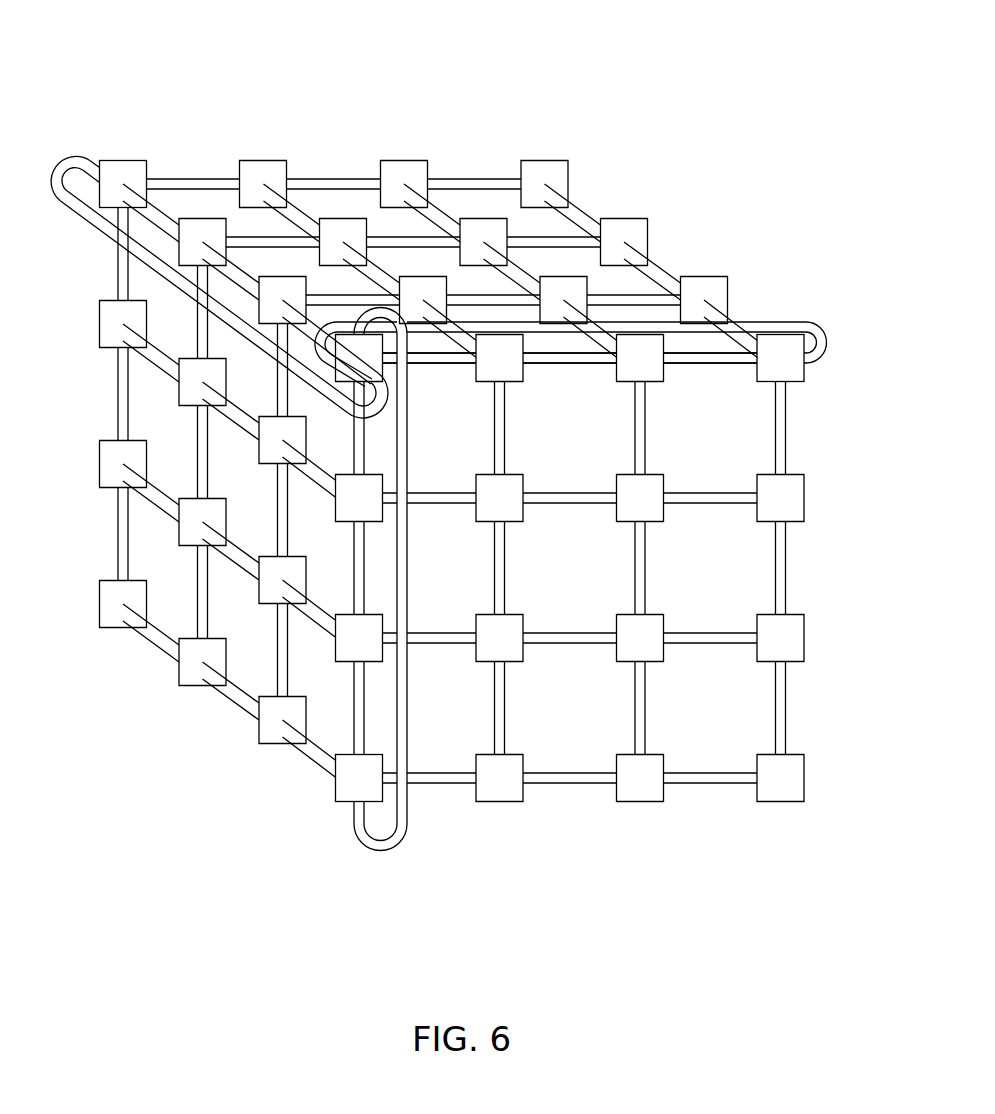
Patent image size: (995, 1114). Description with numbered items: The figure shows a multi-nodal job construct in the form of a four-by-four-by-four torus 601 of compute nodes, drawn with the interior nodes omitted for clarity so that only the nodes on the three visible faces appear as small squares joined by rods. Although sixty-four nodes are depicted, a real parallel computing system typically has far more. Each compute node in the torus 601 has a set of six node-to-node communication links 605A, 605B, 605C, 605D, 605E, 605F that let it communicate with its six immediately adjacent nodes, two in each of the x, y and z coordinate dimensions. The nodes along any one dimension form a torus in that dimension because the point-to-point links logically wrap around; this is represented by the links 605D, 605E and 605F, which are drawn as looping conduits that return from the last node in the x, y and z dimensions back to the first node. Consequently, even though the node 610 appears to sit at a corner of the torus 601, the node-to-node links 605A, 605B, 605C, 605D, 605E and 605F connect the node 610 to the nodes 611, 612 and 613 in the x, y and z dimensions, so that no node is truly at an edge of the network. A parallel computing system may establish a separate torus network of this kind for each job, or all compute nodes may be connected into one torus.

The torus 601 is at (705, 105).
The node-to-node communication link 605A is at (437, 363).
The node-to-node communication link 605B is at (366, 441).
The node-to-node communication link 605C is at (302, 337).
The node-to-node communication link 605D is at (784, 320).
The node-to-node communication link 605E is at (375, 853).
The node-to-node communication link 605F is at (62, 150).
The node 610 is at (348, 366).
The node 611 is at (798, 383).
The node 612 is at (332, 793).
The node 613 is at (131, 160).